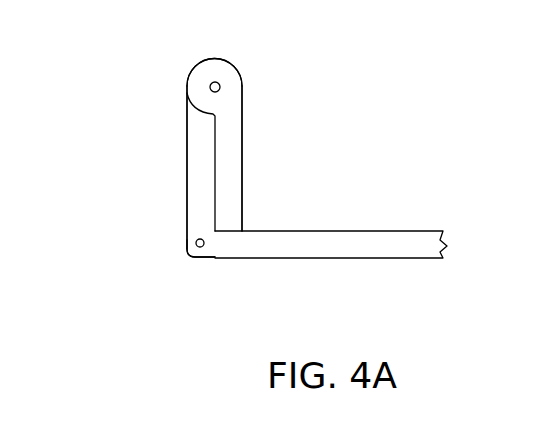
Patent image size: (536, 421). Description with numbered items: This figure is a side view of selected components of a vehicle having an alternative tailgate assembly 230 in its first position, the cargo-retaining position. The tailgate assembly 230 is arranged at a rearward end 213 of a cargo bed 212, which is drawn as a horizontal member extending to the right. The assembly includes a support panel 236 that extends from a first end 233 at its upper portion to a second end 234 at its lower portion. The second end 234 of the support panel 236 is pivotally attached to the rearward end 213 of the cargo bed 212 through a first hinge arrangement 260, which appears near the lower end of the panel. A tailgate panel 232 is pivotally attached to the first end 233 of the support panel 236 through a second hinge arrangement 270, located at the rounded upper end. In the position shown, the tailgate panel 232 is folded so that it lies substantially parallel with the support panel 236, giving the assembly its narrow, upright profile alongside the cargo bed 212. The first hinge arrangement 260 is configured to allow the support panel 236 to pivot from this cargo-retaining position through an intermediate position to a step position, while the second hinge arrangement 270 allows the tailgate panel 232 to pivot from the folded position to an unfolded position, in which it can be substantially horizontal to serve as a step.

The cargo bed 212 is at (339, 183).
The rearward end 213 is at (269, 162).
The tailgate assembly 230 is at (165, 148).
The tailgate panel 232 is at (243, 146).
The first end 233 is at (151, 56).
The second end 234 is at (146, 286).
The support panel 236 is at (187, 131).
The first hinge arrangement 260 is at (200, 247).
The second hinge arrangement 270 is at (213, 82).